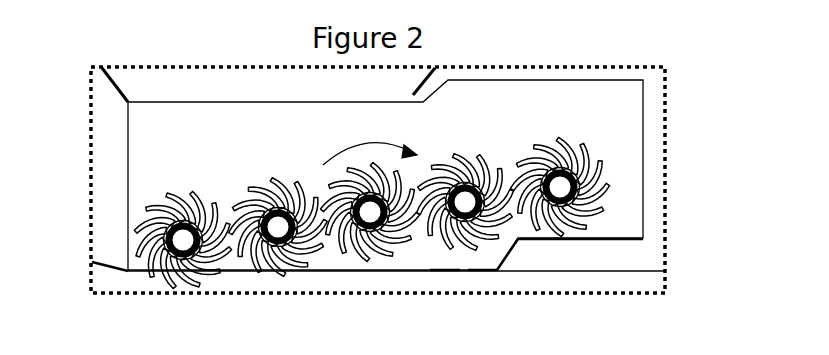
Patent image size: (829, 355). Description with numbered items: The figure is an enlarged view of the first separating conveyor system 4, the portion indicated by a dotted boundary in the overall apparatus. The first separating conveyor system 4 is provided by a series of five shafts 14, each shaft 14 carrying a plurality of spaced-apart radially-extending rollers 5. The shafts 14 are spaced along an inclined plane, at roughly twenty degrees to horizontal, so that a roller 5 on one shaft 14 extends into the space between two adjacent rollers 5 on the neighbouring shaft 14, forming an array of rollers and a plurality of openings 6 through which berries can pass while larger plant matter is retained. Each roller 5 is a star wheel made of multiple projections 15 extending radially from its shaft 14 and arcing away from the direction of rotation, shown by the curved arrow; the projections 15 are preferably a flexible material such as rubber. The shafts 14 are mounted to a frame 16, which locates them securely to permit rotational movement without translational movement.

The first separating conveyor system 4 is at (648, 178).
The radially-extending roller 5 is at (587, 228).
The opening 6 is at (225, 197).
The shaft 14 is at (545, 207).
The projection 15 is at (588, 165).
The frame 16 is at (155, 148).